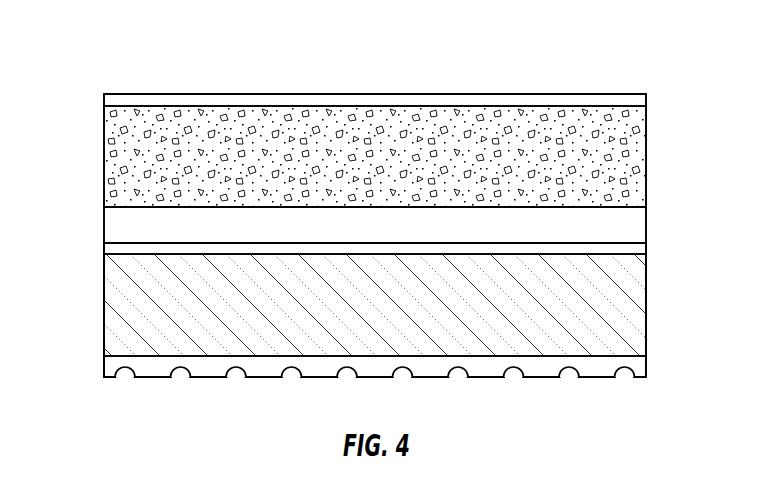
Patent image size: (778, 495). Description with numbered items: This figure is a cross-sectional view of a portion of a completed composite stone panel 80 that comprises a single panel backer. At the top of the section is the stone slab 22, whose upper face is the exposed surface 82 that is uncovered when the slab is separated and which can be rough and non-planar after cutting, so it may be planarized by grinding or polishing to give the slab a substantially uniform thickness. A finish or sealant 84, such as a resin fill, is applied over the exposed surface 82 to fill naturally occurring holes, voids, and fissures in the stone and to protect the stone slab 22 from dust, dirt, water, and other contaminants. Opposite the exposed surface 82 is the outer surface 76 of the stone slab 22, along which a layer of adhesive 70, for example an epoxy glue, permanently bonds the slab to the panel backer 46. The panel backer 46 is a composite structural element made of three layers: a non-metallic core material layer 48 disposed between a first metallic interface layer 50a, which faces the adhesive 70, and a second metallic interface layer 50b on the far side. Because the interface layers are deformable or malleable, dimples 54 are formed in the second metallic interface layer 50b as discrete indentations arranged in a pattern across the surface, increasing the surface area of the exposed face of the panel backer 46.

The composite stone panel 80 is at (95, 61).
The finish or sealant 84 is at (352, 94).
The exposed surface 82 is at (413, 106).
The stone slab 22 is at (386, 165).
The outer surface 76 is at (440, 207).
The adhesive 70 is at (386, 235).
The first metallic interface layer 50a is at (638, 251).
The non-metallic core material layer 48 is at (386, 315).
The panel backer 46 is at (95, 243).
The second metallic interface layer 50b is at (638, 366).
The dimples 54 is at (182, 368).